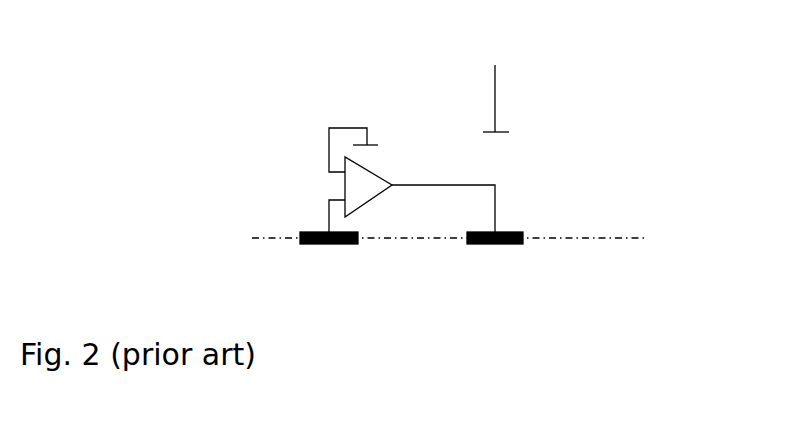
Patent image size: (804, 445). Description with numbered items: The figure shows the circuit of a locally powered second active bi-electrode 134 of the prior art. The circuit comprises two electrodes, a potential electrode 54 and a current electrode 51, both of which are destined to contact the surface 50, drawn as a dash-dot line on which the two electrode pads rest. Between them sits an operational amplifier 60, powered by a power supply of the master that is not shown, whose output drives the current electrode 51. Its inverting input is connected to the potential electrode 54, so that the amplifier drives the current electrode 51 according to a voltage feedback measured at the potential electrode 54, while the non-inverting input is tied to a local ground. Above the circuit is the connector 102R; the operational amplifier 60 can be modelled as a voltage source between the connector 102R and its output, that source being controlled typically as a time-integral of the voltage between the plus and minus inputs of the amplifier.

The locally powered second active bi-electrode 134 is at (283, 99).
The operational amplifier 60 is at (345, 188).
The potential electrode 54 is at (299, 232).
The current electrode 51 is at (523, 232).
The surface 50 is at (612, 238).
The connector 102R is at (497, 93).